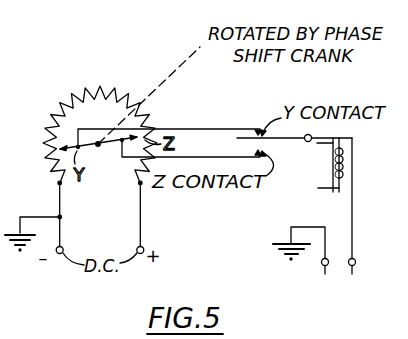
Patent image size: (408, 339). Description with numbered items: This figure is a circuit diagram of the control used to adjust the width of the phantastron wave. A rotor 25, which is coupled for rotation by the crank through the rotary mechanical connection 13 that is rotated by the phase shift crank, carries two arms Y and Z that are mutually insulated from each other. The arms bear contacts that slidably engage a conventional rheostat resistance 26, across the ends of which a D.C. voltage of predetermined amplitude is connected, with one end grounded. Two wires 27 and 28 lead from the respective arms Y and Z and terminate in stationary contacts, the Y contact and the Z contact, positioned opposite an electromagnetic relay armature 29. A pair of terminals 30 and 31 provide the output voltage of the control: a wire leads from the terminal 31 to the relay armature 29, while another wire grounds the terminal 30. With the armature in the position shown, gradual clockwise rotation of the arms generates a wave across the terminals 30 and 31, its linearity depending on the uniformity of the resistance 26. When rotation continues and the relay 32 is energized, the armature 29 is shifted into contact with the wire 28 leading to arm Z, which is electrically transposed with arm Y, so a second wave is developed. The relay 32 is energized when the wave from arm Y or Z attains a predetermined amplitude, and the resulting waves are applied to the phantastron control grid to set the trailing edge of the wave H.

The rotary mechanical connection 13 is at (198, 48).
The rotor 25 is at (99, 150).
The rheostat resistance 26 is at (108, 88).
The wire 27 is at (198, 128).
The wire 28 is at (198, 157).
The electromagnetic relay armature 29 is at (297, 140).
The terminal 30 is at (304, 263).
The terminal 31 is at (356, 218).
The relay 32 is at (346, 158).